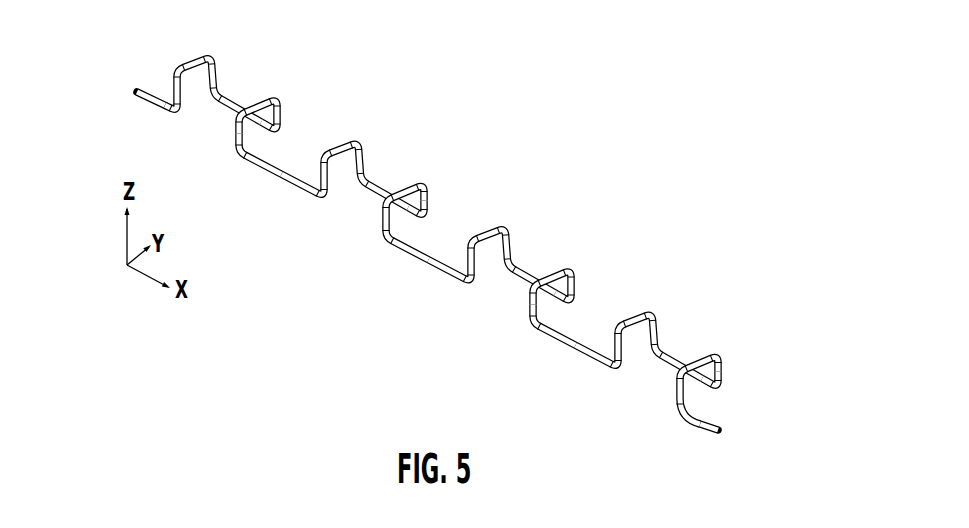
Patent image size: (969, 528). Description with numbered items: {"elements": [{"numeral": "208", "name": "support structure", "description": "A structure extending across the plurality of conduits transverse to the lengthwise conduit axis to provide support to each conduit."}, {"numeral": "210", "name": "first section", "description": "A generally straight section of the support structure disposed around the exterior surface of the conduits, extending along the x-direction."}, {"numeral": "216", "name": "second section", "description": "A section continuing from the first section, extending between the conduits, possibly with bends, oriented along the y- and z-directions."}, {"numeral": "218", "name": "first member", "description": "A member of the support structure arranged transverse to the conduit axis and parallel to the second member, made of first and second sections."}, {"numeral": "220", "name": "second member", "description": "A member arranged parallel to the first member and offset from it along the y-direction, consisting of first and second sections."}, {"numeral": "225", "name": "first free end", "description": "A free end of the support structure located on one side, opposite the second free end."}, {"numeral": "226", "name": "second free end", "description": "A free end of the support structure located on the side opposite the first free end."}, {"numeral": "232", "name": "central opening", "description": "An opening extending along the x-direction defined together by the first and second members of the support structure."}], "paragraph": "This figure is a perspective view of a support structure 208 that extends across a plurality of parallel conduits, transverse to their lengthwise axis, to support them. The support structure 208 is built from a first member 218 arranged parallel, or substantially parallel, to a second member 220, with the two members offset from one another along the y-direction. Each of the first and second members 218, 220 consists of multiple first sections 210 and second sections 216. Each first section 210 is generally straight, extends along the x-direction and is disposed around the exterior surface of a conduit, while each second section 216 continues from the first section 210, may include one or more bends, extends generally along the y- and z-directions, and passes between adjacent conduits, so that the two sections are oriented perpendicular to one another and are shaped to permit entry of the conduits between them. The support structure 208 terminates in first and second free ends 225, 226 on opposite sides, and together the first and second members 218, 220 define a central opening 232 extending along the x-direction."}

The spring member 208 is at (454, 263).
The base portion 210 is at (278, 180).
The loop 216 is at (262, 93).
The first portion 218 is at (412, 273).
The second portion 220 is at (528, 250).
The first end 225 is at (142, 87).
The second end 226 is at (708, 431).
The bend 232 is at (707, 407).